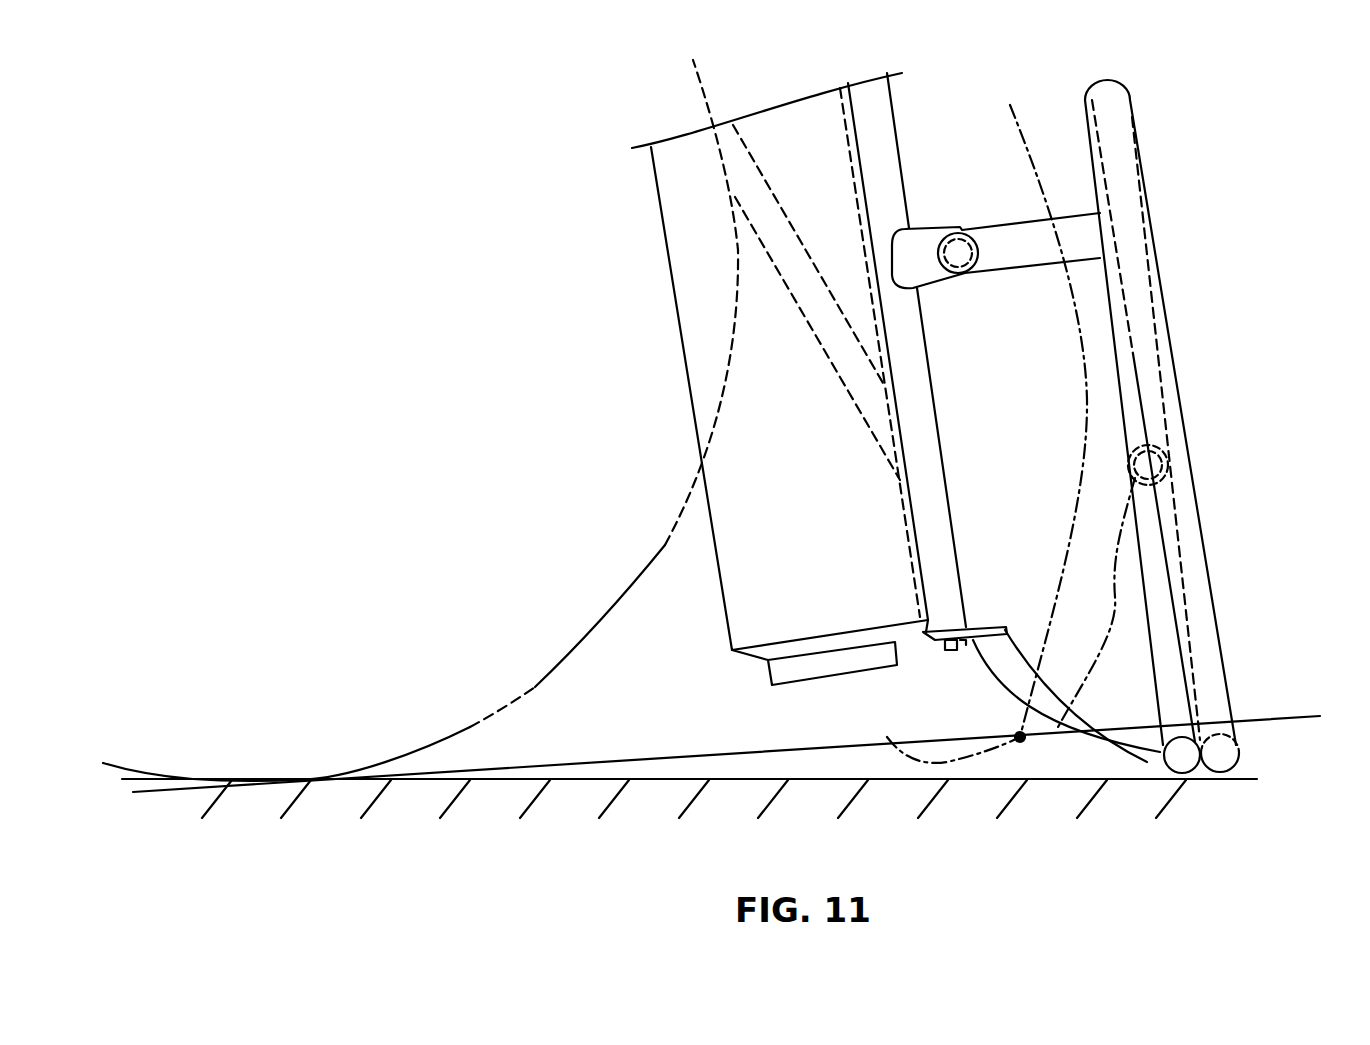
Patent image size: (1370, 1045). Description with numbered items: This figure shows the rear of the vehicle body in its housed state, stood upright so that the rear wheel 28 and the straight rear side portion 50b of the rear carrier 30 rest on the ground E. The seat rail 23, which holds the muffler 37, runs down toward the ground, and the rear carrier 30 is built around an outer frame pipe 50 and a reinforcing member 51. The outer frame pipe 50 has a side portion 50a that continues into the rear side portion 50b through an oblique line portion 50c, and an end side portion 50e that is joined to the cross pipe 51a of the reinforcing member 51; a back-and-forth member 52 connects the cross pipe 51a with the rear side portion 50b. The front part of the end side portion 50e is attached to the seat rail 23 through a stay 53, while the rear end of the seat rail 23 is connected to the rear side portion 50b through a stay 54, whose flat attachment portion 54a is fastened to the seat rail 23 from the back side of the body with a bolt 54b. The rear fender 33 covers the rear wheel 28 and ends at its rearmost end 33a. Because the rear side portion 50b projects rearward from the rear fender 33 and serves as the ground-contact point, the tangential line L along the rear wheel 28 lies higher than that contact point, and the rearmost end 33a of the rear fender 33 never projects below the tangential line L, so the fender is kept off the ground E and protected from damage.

The seat rail 23 is at (880, 123).
The rear wheel 28 is at (535, 687).
The rear carrier 30 is at (1212, 228).
The rear fender 33 is at (1040, 117).
The rearmost end 33a is at (887, 737).
The muffler 37 is at (722, 573).
The outer frame pipe 50 is at (1202, 352).
The side portion 50a is at (1210, 592).
The rear side portion 50b is at (1180, 753).
The oblique line portion 50c is at (1233, 717).
The end side portion 50e is at (1120, 357).
The reinforcing member 51 is at (1110, 492).
The cross pipe 51a is at (1127, 453).
The back-and-forth member 52 is at (1147, 555).
The stay 53 is at (998, 262).
The stay 54 is at (1050, 687).
The attachment portion 54a is at (968, 647).
The bolt 54b is at (950, 650).
The tangential line L is at (738, 746).
The ground E is at (701, 792).